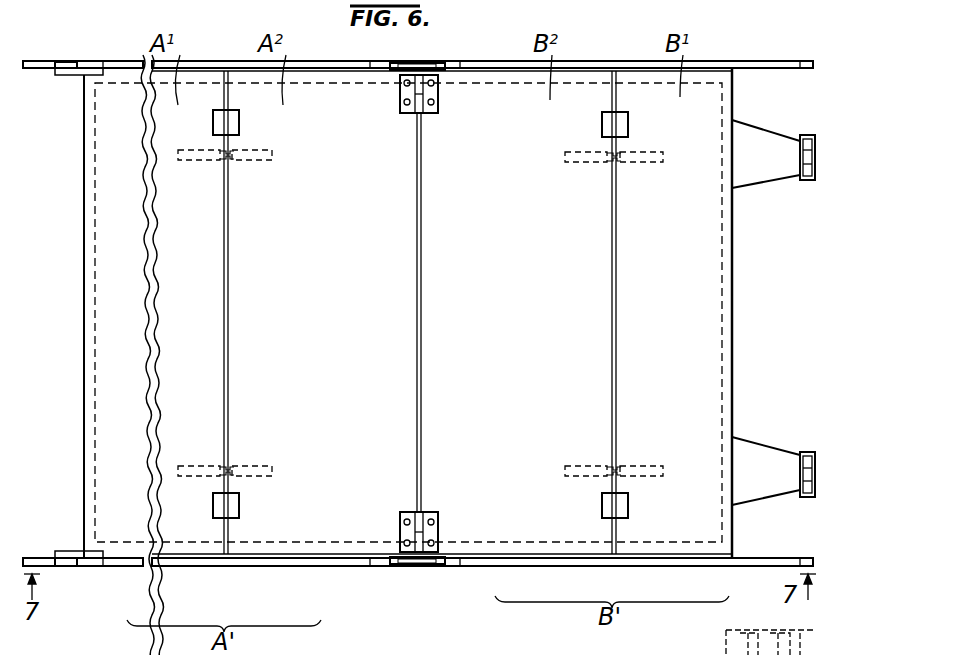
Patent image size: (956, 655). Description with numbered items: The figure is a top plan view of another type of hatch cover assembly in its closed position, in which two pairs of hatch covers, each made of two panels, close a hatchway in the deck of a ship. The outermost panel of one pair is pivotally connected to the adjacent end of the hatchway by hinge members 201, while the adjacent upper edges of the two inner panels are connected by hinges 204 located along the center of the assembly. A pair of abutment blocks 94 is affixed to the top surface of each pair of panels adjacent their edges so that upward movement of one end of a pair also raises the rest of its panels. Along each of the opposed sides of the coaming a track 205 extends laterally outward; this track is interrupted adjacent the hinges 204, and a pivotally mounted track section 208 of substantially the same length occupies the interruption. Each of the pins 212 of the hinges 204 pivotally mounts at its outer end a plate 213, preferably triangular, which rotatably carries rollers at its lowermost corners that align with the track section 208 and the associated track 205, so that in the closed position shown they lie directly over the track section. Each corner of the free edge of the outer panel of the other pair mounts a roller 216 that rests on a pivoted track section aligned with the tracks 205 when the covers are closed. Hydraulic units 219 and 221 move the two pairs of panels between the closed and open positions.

The abutment block 94 is at (620, 124).
The hinge member 201 is at (765, 174).
The hinge 204 is at (398, 108).
The track 205 is at (222, 568).
The track section 208 is at (383, 568).
The pin 212 is at (430, 62).
The plate 213 is at (434, 84).
The roller 216 is at (58, 62).
The hydraulic unit 219 is at (193, 464).
The hydraulic unit 221 is at (257, 464).